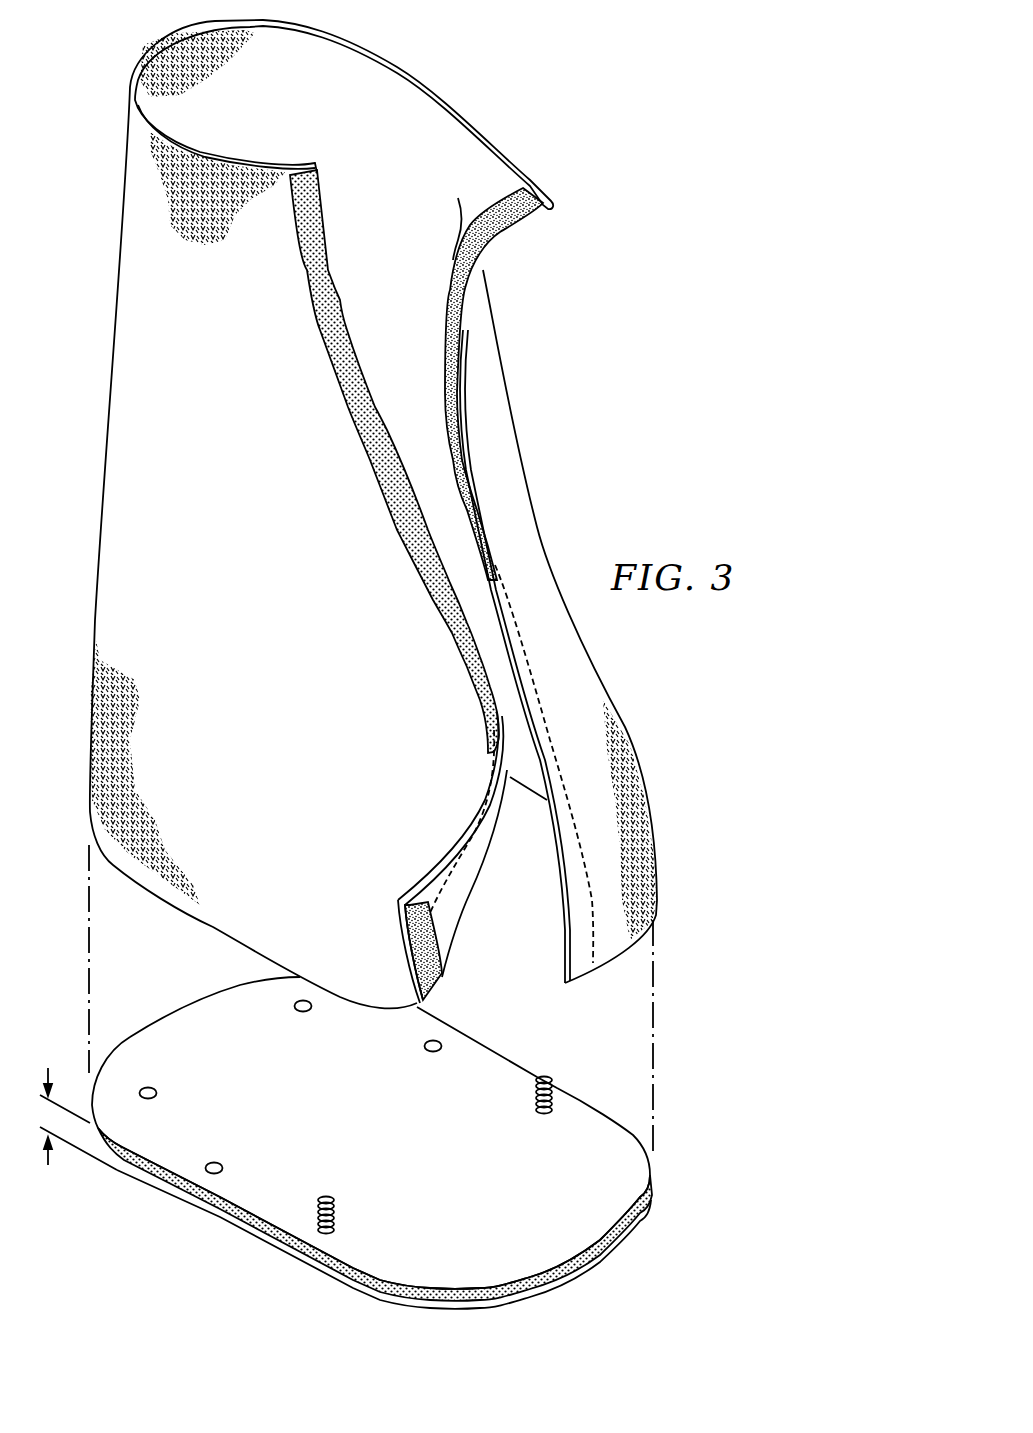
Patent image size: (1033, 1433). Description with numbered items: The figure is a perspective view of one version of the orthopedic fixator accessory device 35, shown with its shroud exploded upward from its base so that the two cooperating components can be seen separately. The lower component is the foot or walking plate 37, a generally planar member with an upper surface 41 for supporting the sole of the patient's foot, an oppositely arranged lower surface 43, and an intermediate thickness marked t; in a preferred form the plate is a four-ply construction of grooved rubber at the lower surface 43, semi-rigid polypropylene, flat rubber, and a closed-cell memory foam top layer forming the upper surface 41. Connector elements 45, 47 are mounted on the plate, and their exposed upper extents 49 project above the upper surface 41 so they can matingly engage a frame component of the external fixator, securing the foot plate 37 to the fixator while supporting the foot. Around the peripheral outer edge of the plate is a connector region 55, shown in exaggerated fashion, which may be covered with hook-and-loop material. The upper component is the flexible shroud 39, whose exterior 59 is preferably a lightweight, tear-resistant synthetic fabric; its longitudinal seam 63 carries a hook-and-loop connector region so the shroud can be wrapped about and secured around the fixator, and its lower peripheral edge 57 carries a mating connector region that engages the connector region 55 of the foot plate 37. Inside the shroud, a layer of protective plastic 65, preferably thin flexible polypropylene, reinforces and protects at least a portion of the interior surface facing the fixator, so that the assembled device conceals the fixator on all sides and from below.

The accessory device 35 is at (579, 363).
The foot plate 37 is at (662, 1194).
The shroud 39 is at (642, 761).
The upper surface 41 is at (477, 1073).
The lower surface 43 is at (570, 1270).
The connector element 45 is at (553, 1083).
The connector element 47 is at (337, 1213).
The upper extent 49 is at (325, 1197).
The connector region 55 is at (197, 1207).
The lower peripheral edge 57 is at (437, 950).
The exterior 59 is at (503, 470).
The longitudinal seam 63 is at (348, 408).
The layer of protective plastic 65 is at (460, 907).